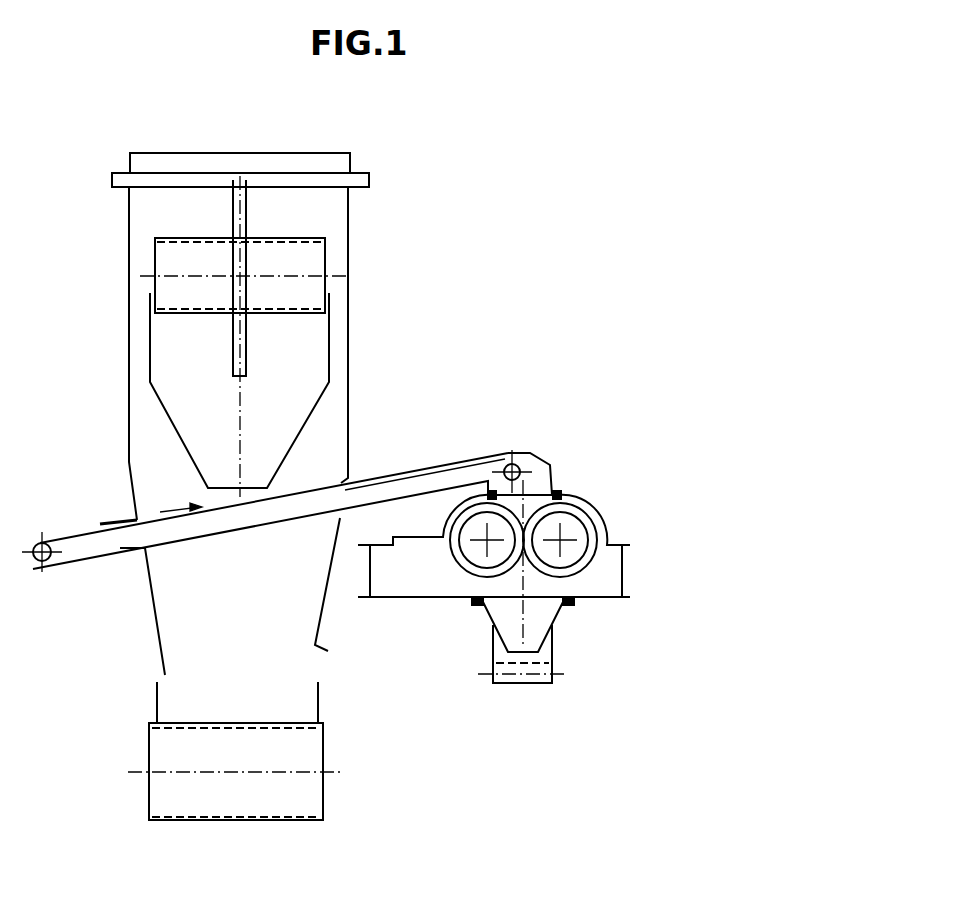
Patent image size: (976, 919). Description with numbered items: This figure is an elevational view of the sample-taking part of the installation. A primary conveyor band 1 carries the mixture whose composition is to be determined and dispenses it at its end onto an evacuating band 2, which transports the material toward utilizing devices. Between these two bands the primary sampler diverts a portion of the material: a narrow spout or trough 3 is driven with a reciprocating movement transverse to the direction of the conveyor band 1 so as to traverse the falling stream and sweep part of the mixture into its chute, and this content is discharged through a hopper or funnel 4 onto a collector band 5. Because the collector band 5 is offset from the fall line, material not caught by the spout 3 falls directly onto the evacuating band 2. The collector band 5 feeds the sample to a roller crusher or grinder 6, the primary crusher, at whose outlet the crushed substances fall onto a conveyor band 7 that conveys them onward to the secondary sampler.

The conveyor band 1 is at (163, 267).
The evacuating band 2 is at (162, 745).
The spout or trough 3 is at (242, 360).
The hopper or funnel 4 is at (177, 347).
The collector band of primary sampling 5 is at (307, 505).
The roller crusher or grinder 6 is at (603, 568).
The conveyor band 7 is at (547, 670).